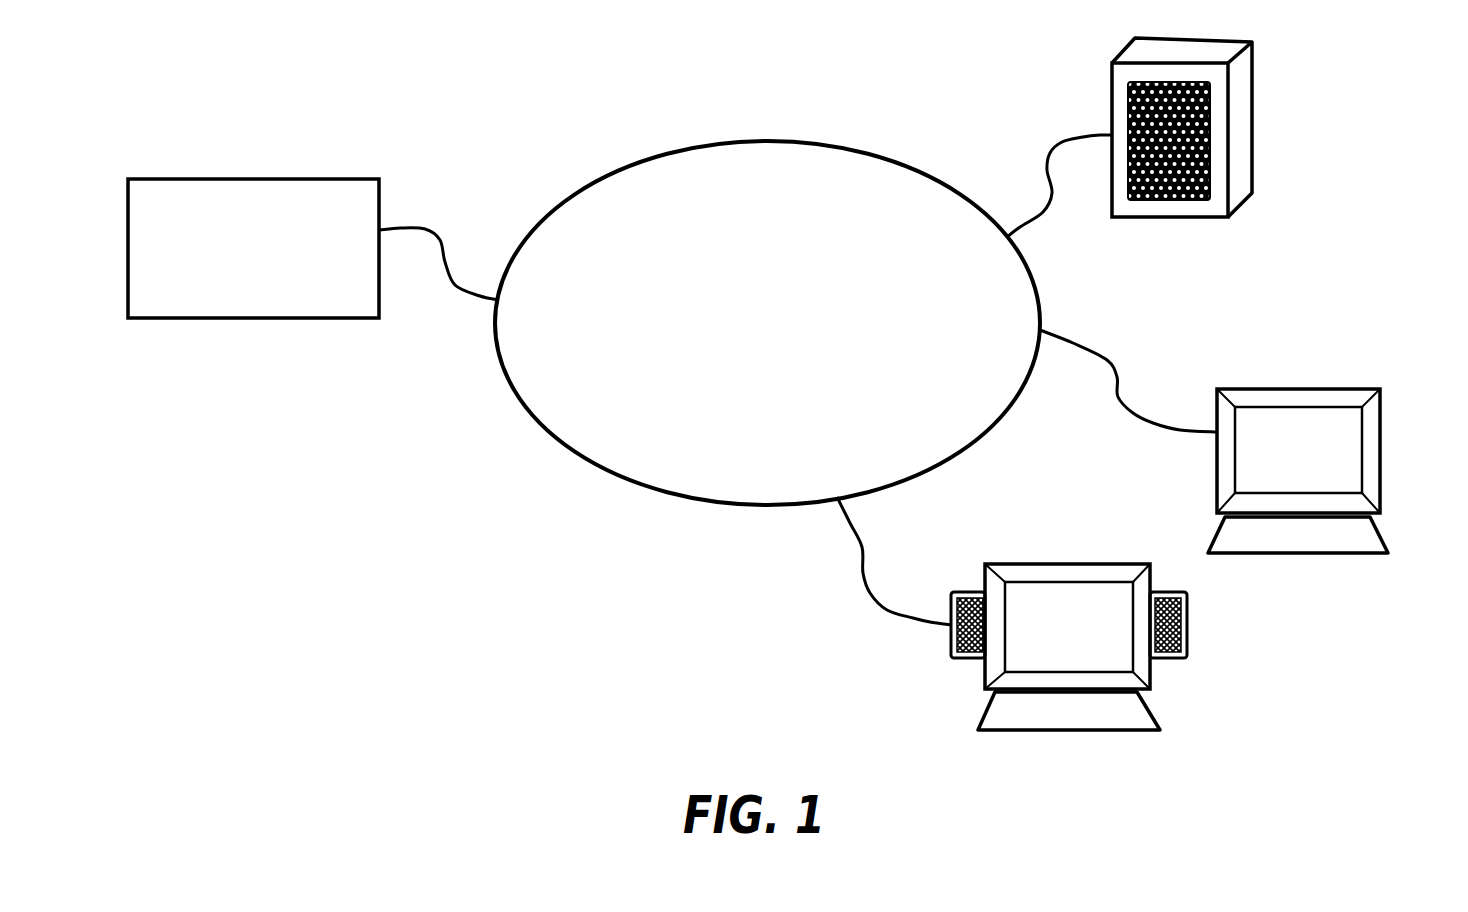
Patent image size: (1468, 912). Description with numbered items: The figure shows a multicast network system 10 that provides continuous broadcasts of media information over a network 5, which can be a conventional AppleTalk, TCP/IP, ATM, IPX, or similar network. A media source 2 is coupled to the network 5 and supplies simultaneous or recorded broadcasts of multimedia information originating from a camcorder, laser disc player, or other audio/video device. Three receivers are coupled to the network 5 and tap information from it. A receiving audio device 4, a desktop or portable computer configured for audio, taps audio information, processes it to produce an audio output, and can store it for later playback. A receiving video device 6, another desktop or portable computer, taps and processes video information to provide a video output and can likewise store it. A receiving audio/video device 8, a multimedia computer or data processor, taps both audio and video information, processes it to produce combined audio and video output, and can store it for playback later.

The multicast network system 10 is at (1370, 803).
The media source 2 is at (255, 178).
The network 5 is at (683, 150).
The receiving audio device 4 is at (1252, 123).
The receiving video device 6 is at (1380, 415).
The receiving audio/video device 8 is at (1188, 612).